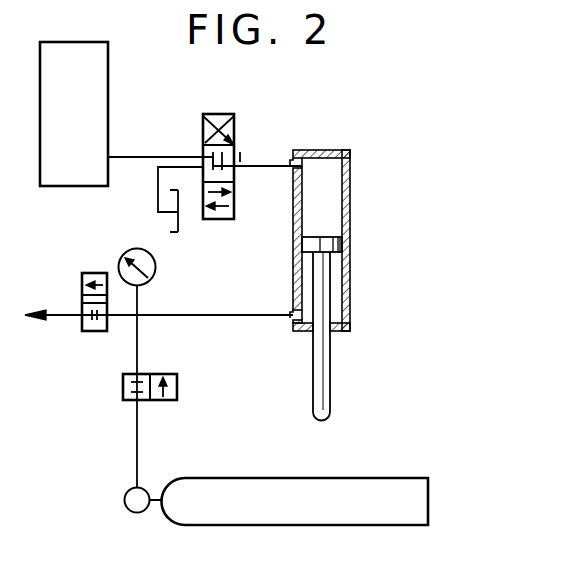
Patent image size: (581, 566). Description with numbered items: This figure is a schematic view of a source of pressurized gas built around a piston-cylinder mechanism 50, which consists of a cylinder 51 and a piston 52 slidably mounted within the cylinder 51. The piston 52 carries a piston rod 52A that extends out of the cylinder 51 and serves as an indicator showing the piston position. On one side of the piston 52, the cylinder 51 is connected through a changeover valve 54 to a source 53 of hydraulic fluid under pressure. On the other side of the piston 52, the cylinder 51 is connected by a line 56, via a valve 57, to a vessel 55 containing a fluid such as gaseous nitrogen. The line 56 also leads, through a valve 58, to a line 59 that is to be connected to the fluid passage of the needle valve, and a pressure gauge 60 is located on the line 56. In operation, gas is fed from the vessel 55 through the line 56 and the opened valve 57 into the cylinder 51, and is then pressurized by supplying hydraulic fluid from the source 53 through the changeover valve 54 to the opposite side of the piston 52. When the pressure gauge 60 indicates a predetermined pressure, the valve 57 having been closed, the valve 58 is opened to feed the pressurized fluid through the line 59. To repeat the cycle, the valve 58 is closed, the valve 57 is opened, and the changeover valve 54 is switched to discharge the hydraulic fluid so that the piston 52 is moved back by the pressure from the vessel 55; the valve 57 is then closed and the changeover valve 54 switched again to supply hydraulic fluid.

The piston-cylinder mechanism 50 is at (349, 274).
The cylinder 51 is at (350, 163).
The piston 52 is at (342, 243).
The piston rod 52A is at (329, 388).
The source of hydraulic fluid under pressure 53 is at (100, 83).
The changeover valve 54 is at (223, 114).
The vessel 55 is at (289, 515).
The line 56 is at (200, 317).
The valve 57 is at (177, 392).
The valve 58 is at (83, 274).
The line 59 is at (74, 318).
The pressure gauge 60 is at (156, 268).